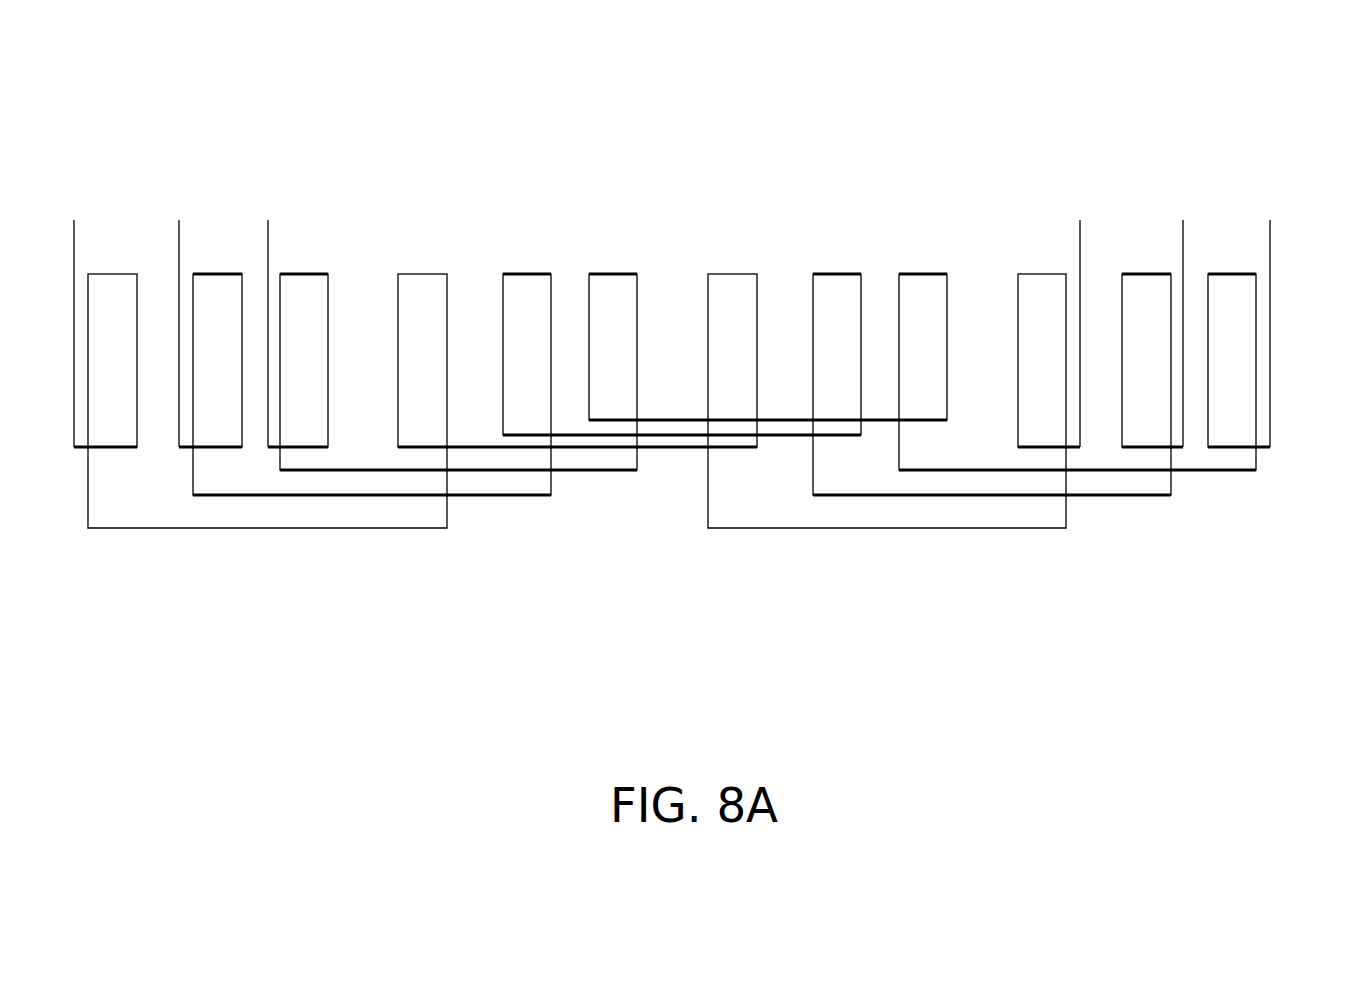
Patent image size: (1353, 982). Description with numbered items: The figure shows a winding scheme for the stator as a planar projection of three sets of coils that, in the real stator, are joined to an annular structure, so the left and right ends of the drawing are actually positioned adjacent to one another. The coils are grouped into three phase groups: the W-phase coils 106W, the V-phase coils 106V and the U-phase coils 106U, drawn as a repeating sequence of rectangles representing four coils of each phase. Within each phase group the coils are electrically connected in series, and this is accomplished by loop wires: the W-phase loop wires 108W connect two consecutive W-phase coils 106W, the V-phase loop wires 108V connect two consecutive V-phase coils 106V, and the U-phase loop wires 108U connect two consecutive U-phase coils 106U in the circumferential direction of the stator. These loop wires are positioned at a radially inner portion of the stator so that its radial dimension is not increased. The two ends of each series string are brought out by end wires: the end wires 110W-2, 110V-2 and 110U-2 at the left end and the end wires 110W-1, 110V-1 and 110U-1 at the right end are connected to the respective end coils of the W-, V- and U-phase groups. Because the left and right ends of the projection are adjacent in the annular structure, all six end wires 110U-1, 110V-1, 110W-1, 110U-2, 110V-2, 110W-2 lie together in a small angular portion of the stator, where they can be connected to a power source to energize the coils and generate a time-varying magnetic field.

The W-phase coil 106W is at (119, 298).
The V-phase coil 106V is at (226, 290).
The U-phase coil 106U is at (317, 288).
The W-phase loop wire 108W is at (142, 537).
The V-phase loop wire 108V is at (465, 505).
The U-phase loop wire 108U is at (655, 408).
The W-phase end wire 110W-2 is at (74, 206).
The V-phase end wire 110V-2 is at (179, 206).
The U-phase end wire 110U-2 is at (268, 206).
The W-phase end wire 110W-1 is at (1081, 198).
The V-phase end wire 110V-1 is at (1183, 198).
The U-phase end wire 110U-1 is at (1270, 198).